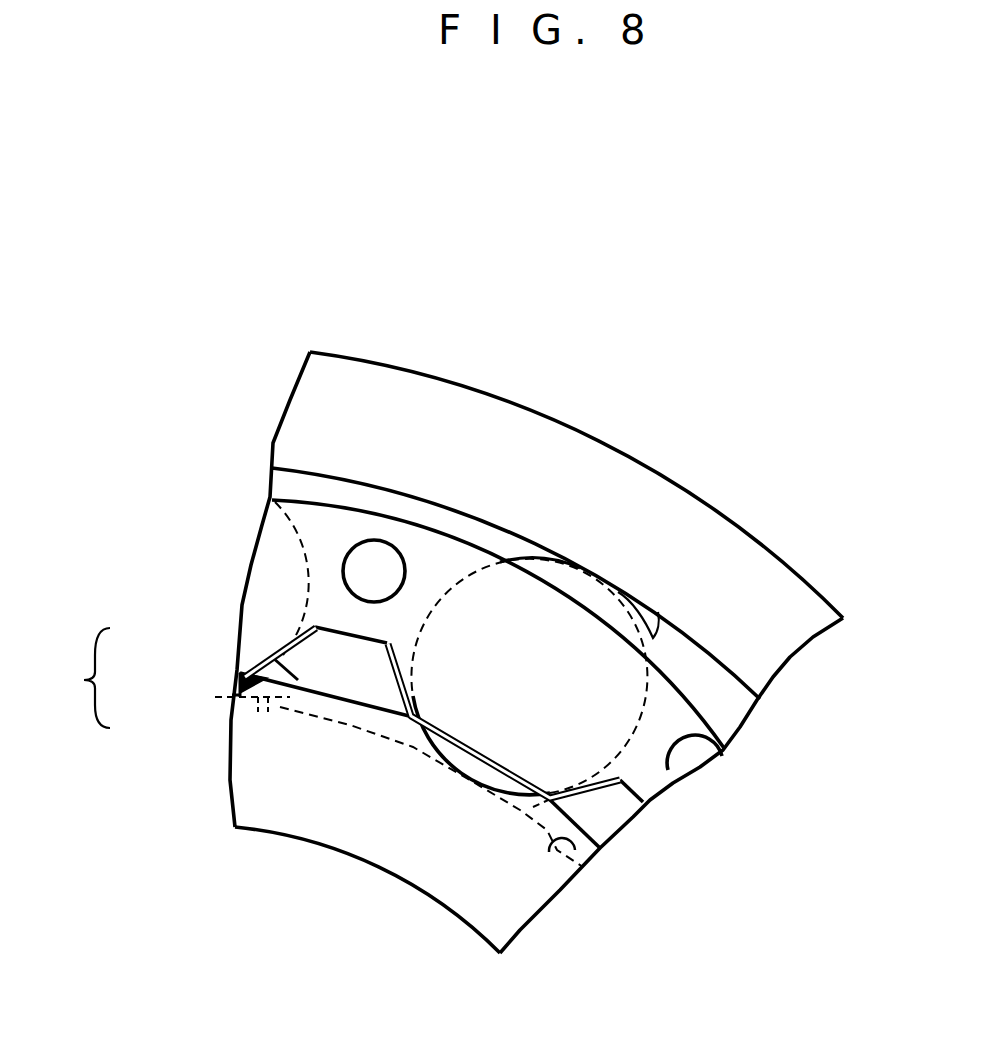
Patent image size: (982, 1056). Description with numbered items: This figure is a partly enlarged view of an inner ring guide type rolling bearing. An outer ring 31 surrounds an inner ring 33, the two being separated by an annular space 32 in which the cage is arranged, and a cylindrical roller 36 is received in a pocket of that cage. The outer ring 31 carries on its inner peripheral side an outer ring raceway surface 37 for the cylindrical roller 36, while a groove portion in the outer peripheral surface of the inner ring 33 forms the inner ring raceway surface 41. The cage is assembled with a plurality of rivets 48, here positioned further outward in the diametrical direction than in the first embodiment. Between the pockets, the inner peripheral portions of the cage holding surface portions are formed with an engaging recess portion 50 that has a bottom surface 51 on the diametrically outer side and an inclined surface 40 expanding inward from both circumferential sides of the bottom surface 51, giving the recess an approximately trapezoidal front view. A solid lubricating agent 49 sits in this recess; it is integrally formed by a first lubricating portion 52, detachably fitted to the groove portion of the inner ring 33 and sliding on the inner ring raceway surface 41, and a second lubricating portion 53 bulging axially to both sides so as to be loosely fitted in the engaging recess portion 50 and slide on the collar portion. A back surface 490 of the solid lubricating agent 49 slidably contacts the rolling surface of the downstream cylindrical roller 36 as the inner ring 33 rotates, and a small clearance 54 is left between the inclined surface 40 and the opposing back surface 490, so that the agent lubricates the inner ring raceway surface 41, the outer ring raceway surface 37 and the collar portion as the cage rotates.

The outer ring 31 is at (567, 453).
The annular space 32 is at (732, 698).
The inner ring 33 is at (482, 905).
The cylindrical roller 36 is at (270, 560).
The outer ring raceway surface 37 is at (652, 640).
The inclined surface 40 is at (388, 678).
The inner ring raceway surface 41 is at (577, 848).
The rivet 48 is at (697, 765).
The solid lubricating agent 49 is at (77, 678).
The back surface 490 is at (407, 673).
The engaging recess portion 50 is at (335, 631).
The bottom surface 51 is at (298, 643).
The first lubricating portion 52 is at (260, 697).
The second lubricating portion 53 is at (250, 647).
The small clearance 54 is at (413, 693).